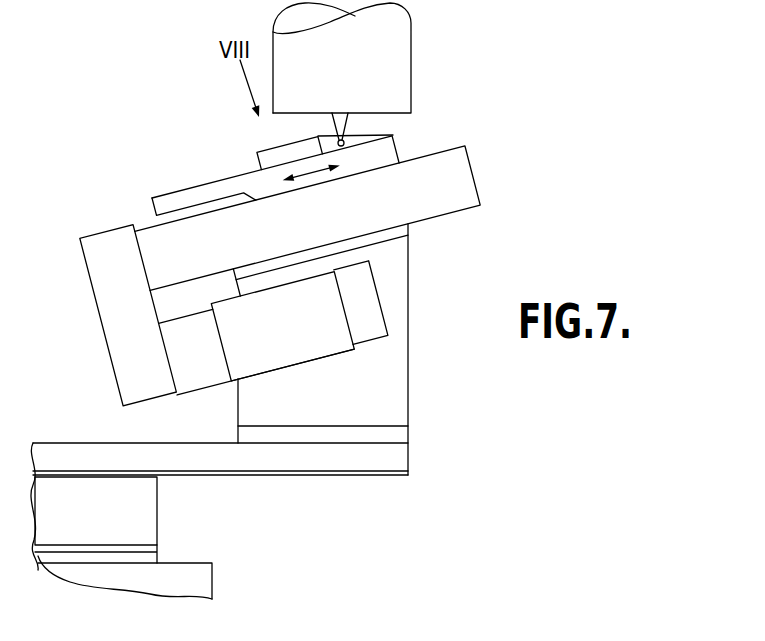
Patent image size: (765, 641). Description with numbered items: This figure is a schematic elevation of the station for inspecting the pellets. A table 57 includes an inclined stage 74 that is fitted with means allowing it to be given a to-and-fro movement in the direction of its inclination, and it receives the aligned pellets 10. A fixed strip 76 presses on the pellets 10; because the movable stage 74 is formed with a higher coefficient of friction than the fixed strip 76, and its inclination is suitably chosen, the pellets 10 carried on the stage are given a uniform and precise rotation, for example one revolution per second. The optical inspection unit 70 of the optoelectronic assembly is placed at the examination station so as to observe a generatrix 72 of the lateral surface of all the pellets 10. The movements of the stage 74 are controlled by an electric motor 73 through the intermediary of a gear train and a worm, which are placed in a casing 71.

The optical inspection unit 70 is at (383, 38).
The generatrix 72 is at (345, 143).
The fixed strip 76 is at (305, 143).
The pellets 10 is at (393, 136).
The table 57 is at (177, 174).
The inclined stage 74 is at (173, 200).
The casing 71 is at (157, 263).
The electric motor 73 is at (318, 328).